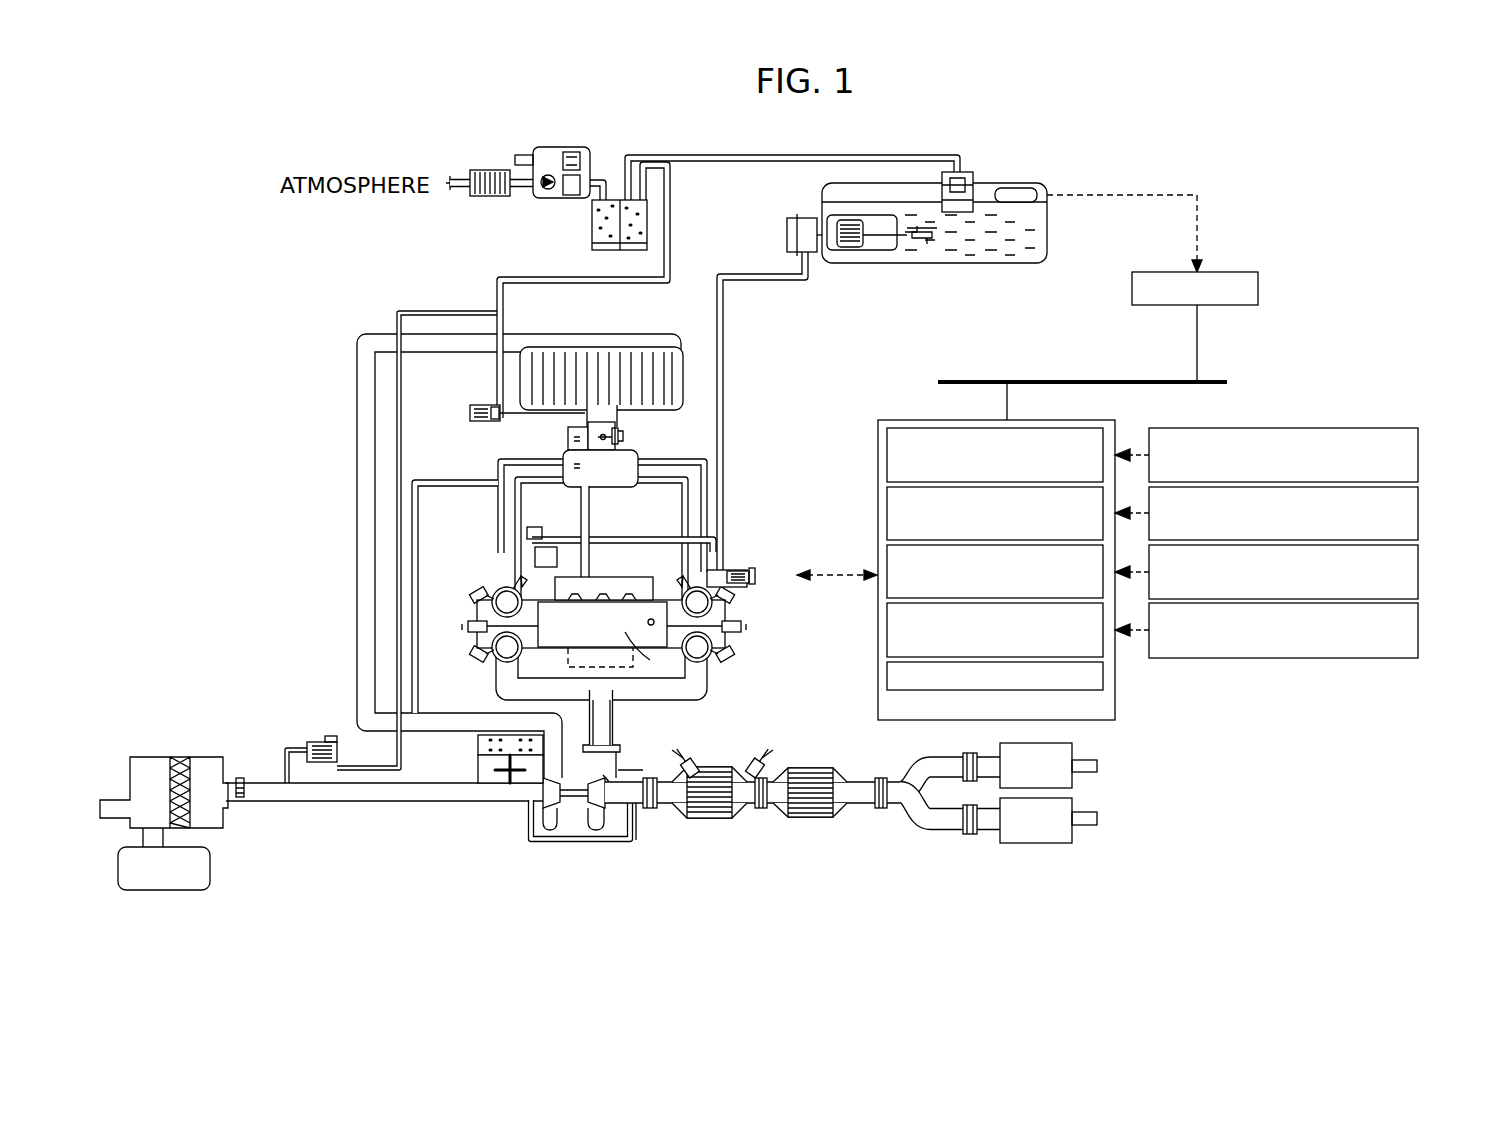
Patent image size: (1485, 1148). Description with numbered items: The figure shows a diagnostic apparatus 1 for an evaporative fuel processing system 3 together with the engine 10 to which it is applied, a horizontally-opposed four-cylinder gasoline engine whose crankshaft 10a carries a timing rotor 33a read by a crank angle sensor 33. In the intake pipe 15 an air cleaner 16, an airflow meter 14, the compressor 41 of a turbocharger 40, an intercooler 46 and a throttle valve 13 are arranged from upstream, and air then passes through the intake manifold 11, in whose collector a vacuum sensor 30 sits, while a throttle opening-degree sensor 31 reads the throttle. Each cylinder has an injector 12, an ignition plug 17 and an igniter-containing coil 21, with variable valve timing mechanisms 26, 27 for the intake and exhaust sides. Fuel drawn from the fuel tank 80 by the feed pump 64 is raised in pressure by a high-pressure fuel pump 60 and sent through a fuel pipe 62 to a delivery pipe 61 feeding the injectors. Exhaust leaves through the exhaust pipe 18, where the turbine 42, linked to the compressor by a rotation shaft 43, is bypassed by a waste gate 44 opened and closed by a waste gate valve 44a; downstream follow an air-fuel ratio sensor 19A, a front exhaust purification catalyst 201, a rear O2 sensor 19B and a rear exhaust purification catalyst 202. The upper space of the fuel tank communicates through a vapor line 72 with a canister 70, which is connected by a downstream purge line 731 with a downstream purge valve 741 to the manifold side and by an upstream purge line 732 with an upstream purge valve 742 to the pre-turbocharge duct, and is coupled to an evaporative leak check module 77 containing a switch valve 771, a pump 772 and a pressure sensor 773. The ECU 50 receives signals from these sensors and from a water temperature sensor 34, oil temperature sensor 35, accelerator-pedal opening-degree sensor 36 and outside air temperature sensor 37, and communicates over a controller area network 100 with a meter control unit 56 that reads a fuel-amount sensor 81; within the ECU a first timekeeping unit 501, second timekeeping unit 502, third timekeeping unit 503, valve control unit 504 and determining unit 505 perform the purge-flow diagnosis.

The diagnostic apparatus 1 is at (880, 388).
The evaporative fuel processing system 3 is at (462, 290).
The engine 10 is at (742, 500).
The crankshaft 10a is at (577, 662).
The intake manifold 11 is at (710, 480).
The injector 12 is at (512, 580).
The throttle valve 13 is at (612, 440).
The airflow meter 14 is at (240, 776).
The intake pipe 15 is at (357, 481).
The air cleaner 16 is at (180, 757).
The ignition plug 17 is at (533, 627).
The exhaust pipe 18 is at (497, 685).
The air-fuel ratio sensor 19A is at (680, 764).
The rear O2 sensor 19B is at (765, 764).
The igniter-containing coil 21 is at (466, 626).
The variable valve timing mechanism 26 is at (476, 602).
The variable valve timing mechanism 27 is at (476, 658).
The vacuum sensor 30 is at (598, 468).
The throttle opening-degree sensor 31 is at (620, 432).
The crank angle sensor 33 is at (604, 615).
The timing rotor 33a is at (652, 654).
The water temperature sensor 34 is at (1418, 443).
The oil temperature sensor 35 is at (1418, 500).
The accelerator-pedal opening-degree sensor 36 is at (1418, 557).
The outside air temperature sensor 37 is at (1418, 615).
The turbocharger 40 is at (600, 855).
The compressor 41 is at (551, 810).
The turbine 42 is at (598, 812).
The rotation shaft 43 is at (570, 790).
The waste gate 44 is at (620, 772).
The waste gate valve 44a is at (636, 822).
The intercooler 46 is at (630, 347).
The engine control unit 50 is at (1115, 712).
The meter control unit 56 is at (1258, 287).
The high-pressure fuel pump 60 is at (757, 573).
The delivery pipe 61 is at (662, 537).
The fuel pipe 62 is at (727, 555).
The feed pump 64 is at (787, 236).
The canister 70 is at (592, 248).
The vapor line 72 is at (740, 165).
The evaporative leak check module 77 is at (533, 166).
The fuel tank 80 is at (1025, 263).
The fuel-amount sensor 81 is at (1016, 188).
The controller area network 100 is at (1103, 380).
The front exhaust purification catalyst 201 is at (722, 818).
The rear exhaust purification catalyst 202 is at (812, 817).
The first timekeeping unit 501 is at (887, 453).
The second timekeeping unit 502 is at (887, 525).
The third timekeeping unit 503 is at (887, 570).
The valve control unit 504 is at (887, 640).
The determining unit 505 is at (887, 682).
The downstream purge line 731 is at (497, 379).
The upstream purge line 732 is at (402, 462).
The downstream purge valve 741 is at (470, 413).
The upstream purge valve 742 is at (318, 742).
The switch valve 771 is at (572, 195).
The pump 772 is at (545, 190).
The pressure sensor 773 is at (580, 155).